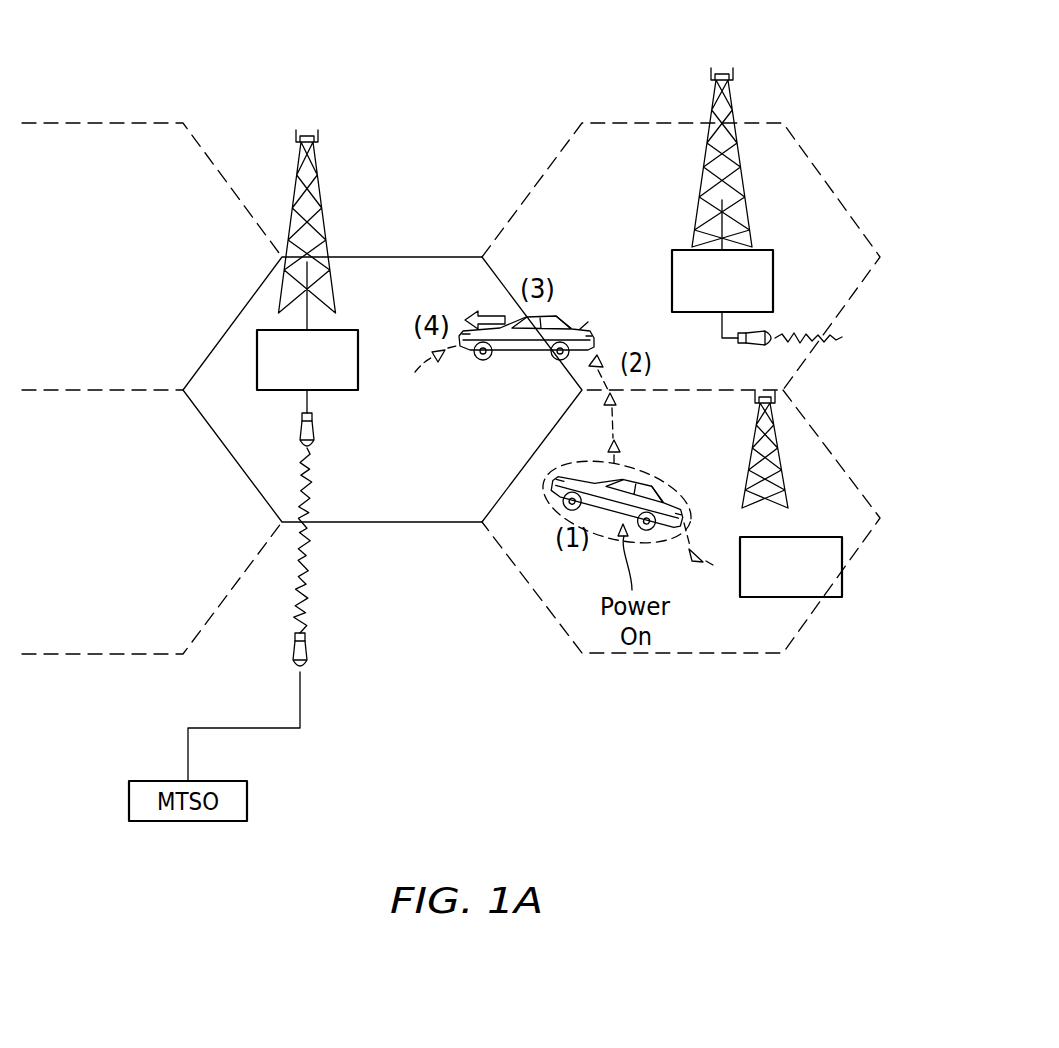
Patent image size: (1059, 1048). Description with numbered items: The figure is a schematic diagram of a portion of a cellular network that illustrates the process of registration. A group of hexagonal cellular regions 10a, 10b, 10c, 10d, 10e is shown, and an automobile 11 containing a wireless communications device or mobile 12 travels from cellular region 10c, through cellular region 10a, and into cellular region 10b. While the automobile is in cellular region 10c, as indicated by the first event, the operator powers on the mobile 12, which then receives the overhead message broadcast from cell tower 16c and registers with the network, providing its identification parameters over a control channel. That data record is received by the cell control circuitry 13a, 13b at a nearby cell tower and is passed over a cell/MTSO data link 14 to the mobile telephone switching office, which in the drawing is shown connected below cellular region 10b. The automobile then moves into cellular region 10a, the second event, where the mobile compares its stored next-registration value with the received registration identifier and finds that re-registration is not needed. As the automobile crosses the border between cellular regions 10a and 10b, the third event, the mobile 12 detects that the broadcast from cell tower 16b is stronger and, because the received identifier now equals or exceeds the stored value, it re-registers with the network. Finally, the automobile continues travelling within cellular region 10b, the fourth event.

The cellular region 10a is at (608, 193).
The cellular region 10b is at (481, 493).
The cellular region 10c is at (700, 437).
The cellular region 10d is at (172, 271).
The cellular region 10e is at (172, 486).
The automobile 11 is at (584, 330).
The wireless communications device 12 is at (558, 316).
The cell control circuitry 13a is at (768, 598).
The cell control circuitry 13b is at (358, 370).
The cell/MTSO data link 14 is at (318, 494).
The cell tower 16b is at (306, 130).
The cell tower 16c is at (719, 62).